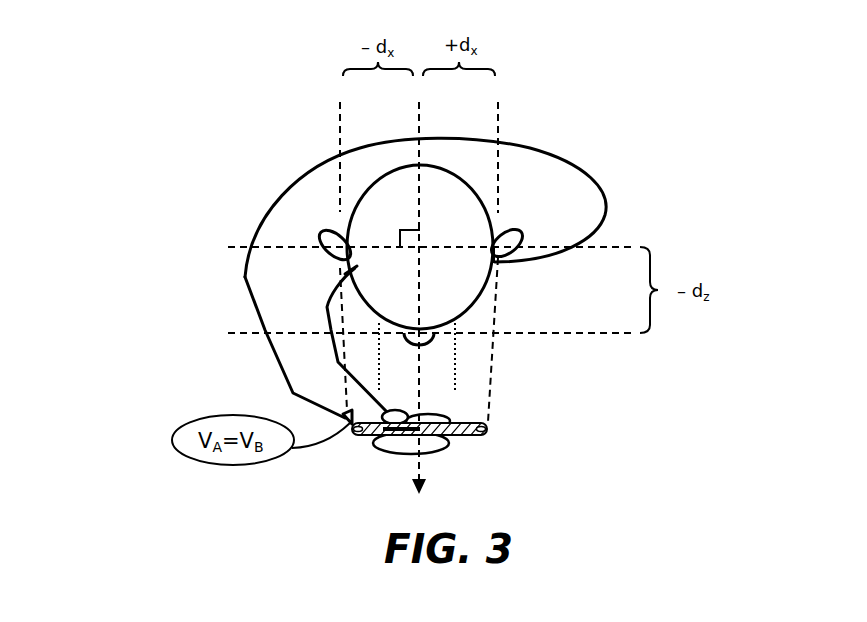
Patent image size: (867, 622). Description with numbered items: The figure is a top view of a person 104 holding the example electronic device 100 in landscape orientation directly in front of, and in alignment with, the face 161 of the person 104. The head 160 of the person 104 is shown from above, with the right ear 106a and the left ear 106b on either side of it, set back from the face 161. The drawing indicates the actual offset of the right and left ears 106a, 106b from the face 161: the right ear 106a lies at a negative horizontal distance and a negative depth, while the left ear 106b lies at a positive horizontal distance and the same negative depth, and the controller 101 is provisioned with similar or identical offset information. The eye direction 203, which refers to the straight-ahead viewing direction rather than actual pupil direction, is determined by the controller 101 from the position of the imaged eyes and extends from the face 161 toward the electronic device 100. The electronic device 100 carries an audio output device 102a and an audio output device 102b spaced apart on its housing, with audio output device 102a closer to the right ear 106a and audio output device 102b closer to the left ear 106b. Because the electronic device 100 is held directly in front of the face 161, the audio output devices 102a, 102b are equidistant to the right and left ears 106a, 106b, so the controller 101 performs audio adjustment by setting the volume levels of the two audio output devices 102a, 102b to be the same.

The head 160 is at (385, 208).
The right ear 106a is at (320, 232).
The left ear 106b is at (522, 226).
The person 104 is at (600, 190).
The face 161 is at (457, 334).
The electronic device 100 is at (450, 416).
The controller 101 is at (372, 437).
The audio output device 102a is at (357, 437).
The audio output device 102b is at (488, 427).
The eye direction 203 is at (420, 463).